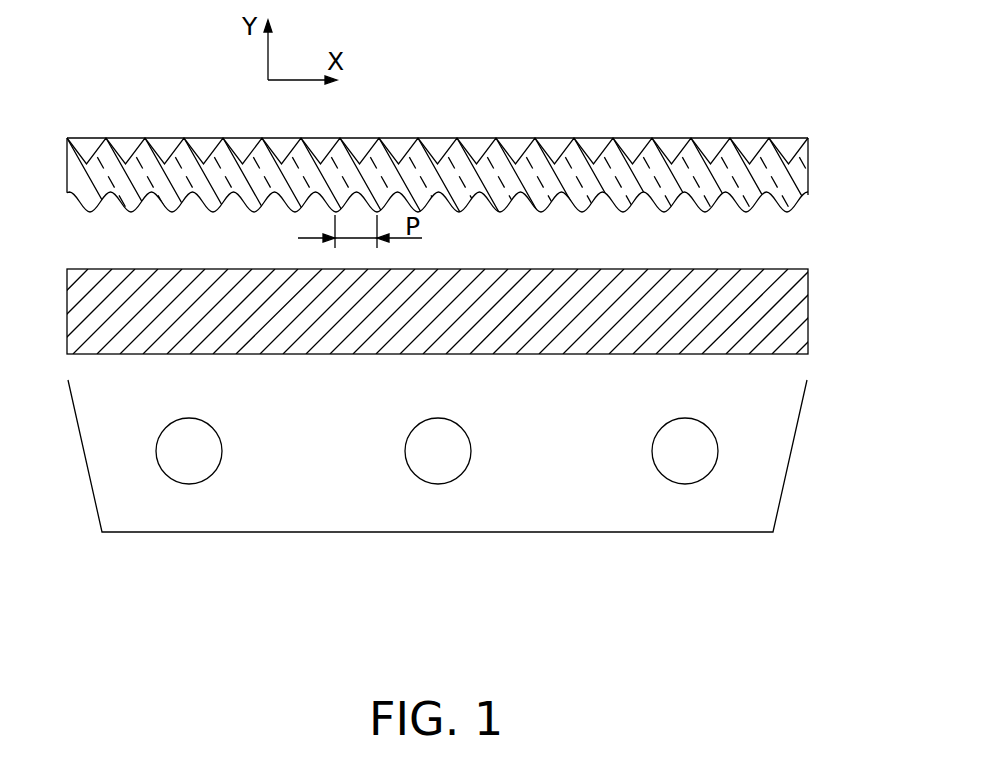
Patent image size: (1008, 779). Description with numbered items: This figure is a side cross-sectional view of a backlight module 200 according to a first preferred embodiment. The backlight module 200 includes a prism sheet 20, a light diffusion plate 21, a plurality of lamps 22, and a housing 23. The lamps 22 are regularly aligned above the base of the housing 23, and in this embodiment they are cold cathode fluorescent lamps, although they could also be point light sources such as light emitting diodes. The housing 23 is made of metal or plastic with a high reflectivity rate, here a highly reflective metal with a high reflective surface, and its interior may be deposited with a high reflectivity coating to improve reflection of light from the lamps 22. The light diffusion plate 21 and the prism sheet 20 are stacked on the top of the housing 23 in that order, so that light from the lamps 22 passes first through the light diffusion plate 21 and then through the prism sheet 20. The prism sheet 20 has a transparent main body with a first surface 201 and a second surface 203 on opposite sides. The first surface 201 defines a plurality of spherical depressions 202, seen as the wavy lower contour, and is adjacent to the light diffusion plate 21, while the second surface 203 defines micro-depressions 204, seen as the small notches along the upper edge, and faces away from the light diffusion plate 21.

The backlight module 200 is at (502, 76).
The prism sheet 20 is at (467, 152).
The first surface 201 is at (150, 193).
The spherical depressions 202 is at (747, 207).
The second surface 203 is at (125, 138).
The micro-depressions 204 is at (748, 148).
The light diffusion plate 21 is at (808, 315).
The lamps 22 is at (693, 470).
The housing 23 is at (470, 487).